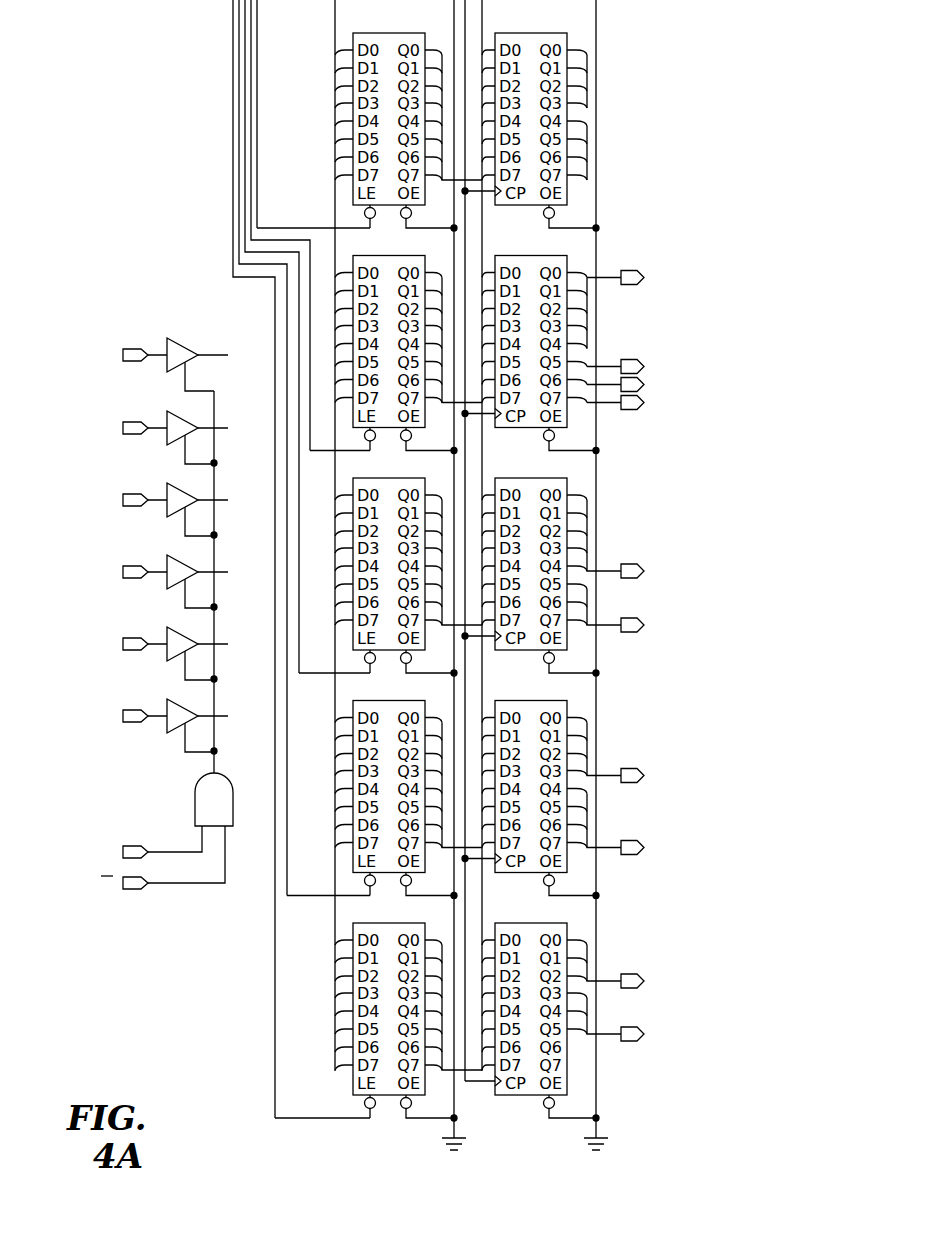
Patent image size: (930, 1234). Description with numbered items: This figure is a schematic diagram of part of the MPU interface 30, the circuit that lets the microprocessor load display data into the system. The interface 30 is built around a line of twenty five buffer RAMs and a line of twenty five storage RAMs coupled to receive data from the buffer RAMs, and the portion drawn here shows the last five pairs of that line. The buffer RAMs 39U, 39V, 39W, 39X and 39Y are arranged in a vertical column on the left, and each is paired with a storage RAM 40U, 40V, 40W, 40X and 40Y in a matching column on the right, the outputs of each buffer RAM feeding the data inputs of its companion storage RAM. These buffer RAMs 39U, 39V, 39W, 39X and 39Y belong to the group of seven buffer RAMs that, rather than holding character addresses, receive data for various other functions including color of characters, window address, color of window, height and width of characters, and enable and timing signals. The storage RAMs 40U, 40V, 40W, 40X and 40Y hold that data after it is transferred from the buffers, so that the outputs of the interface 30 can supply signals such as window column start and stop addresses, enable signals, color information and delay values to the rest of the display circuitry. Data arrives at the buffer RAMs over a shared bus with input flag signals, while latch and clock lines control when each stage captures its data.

The MPU interface 30 is at (426, 575).
The buffer RAM 39U is at (393, 0).
The buffer RAM 39V is at (396, 342).
The buffer RAM 39W is at (390, 564).
The buffer RAM 39X is at (384, 787).
The buffer RAM 39Y is at (378, 1009).
The storage RAM 40U is at (537, 0).
The storage RAM 40V is at (632, 342).
The storage RAM 40W is at (632, 564).
The storage RAM 40X is at (628, 787).
The storage RAM 40Y is at (595, 1009).